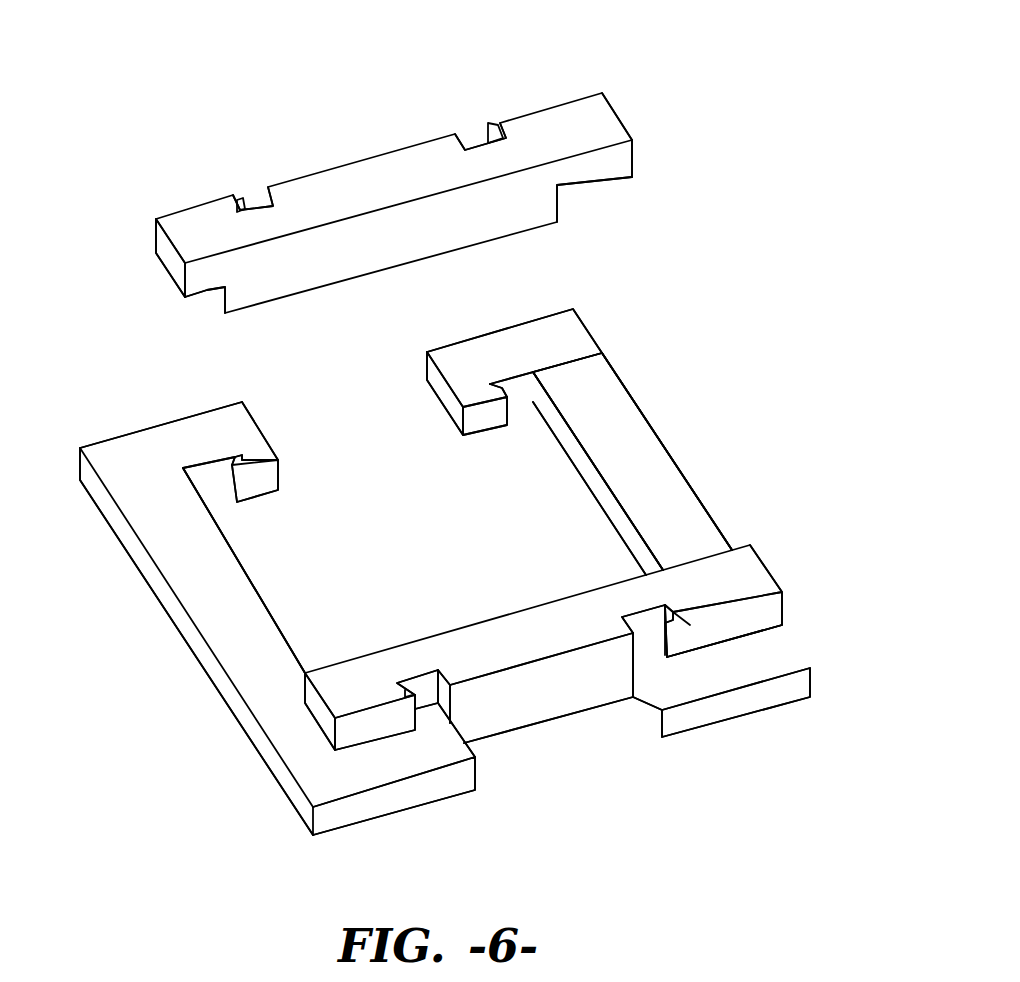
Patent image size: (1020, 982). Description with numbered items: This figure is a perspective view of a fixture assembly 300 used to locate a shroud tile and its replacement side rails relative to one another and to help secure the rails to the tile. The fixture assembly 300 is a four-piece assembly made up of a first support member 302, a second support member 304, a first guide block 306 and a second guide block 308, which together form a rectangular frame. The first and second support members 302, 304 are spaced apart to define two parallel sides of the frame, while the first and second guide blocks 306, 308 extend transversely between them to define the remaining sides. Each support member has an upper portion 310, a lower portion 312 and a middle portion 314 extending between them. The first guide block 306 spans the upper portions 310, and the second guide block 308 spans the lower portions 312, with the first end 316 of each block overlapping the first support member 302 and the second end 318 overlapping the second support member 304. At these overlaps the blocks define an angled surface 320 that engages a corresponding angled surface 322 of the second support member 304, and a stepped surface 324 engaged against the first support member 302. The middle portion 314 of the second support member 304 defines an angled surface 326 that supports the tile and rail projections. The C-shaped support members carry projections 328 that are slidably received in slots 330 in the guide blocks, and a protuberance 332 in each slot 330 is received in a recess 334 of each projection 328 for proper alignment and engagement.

The fixture assembly 300 is at (262, 83).
The first support member 302 is at (208, 659).
The second support member 304 is at (648, 463).
The first guide block 306 is at (383, 172).
The second guide block 308 is at (533, 697).
The upper portion 310 is at (603, 374).
The lower portion 312 is at (305, 755).
The middle portion 314 is at (607, 458).
The first end 316 is at (163, 248).
The second end 318 is at (606, 112).
The angled surface 320 is at (596, 185).
The angled surface 322 is at (617, 410).
The stepped surface 324 is at (198, 292).
The angled surface 326 is at (686, 505).
The projection 328 is at (262, 455).
The slot 330 is at (463, 143).
The protuberance 332 is at (488, 125).
The recess 334 is at (483, 384).